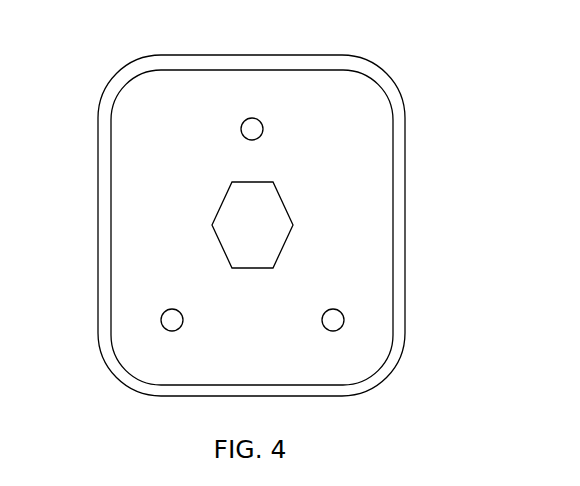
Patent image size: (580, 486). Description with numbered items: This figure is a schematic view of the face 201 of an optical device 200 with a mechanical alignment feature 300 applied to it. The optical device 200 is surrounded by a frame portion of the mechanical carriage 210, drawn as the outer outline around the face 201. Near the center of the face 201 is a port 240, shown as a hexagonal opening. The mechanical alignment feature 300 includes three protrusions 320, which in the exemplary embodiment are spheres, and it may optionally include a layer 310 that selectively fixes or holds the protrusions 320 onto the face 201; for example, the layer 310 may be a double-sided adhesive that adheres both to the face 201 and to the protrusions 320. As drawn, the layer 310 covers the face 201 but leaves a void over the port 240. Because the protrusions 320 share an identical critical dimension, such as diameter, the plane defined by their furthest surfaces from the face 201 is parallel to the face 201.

The optical device 200 is at (318, 227).
The face 201 is at (386, 208).
The mechanical carriage 210 is at (392, 88).
The port 240 is at (272, 236).
The mechanical alignment feature 300 is at (282, 168).
The layer 310 is at (360, 283).
The protrusions 320 is at (253, 118).